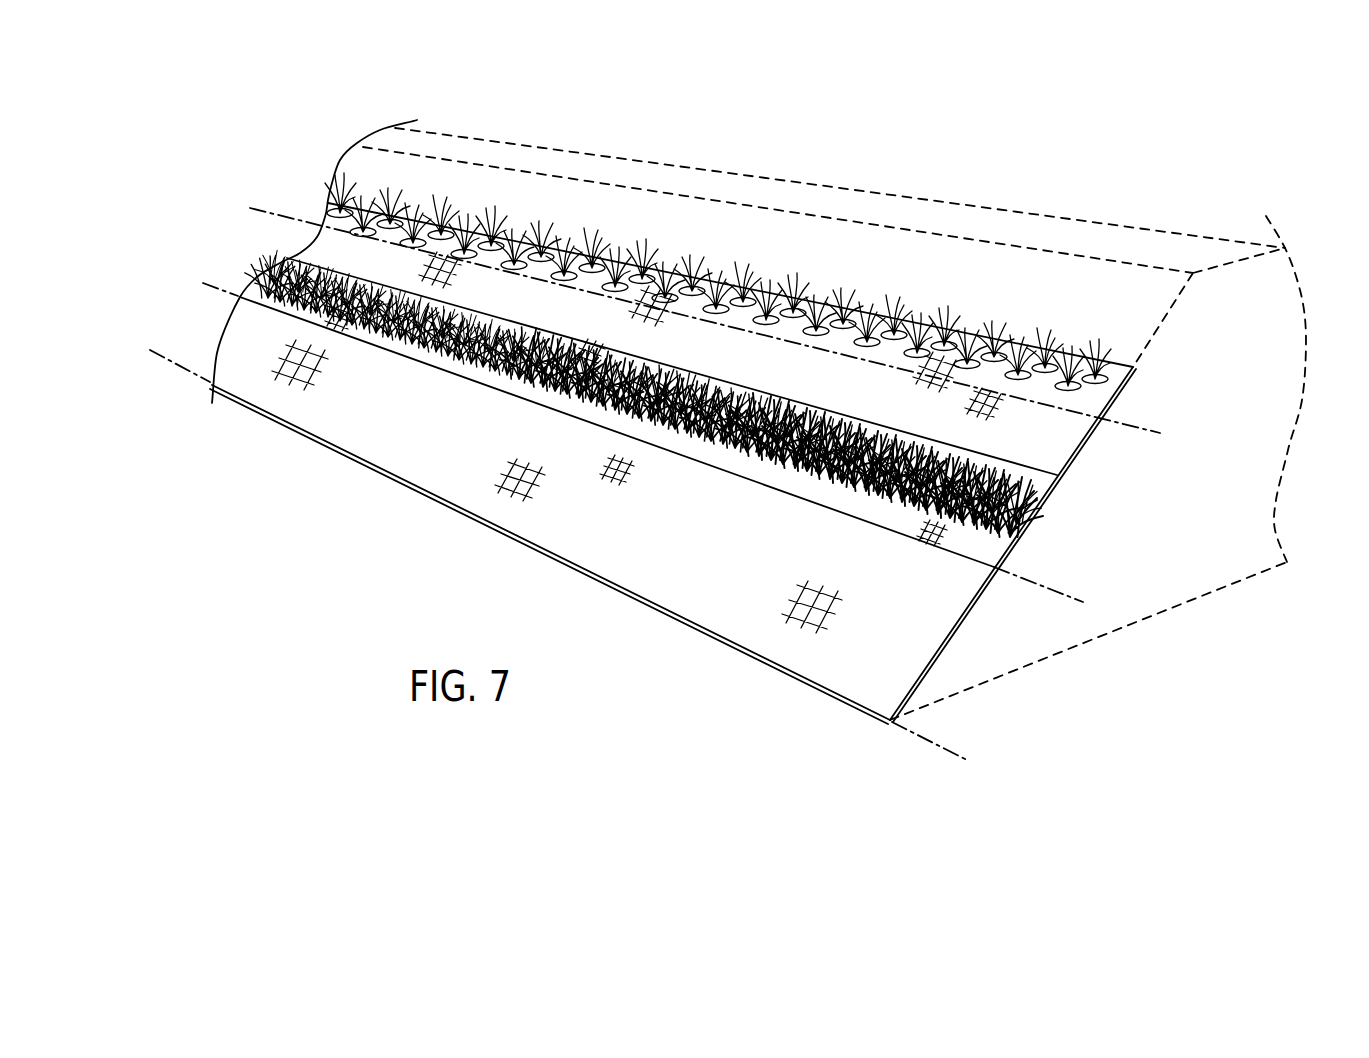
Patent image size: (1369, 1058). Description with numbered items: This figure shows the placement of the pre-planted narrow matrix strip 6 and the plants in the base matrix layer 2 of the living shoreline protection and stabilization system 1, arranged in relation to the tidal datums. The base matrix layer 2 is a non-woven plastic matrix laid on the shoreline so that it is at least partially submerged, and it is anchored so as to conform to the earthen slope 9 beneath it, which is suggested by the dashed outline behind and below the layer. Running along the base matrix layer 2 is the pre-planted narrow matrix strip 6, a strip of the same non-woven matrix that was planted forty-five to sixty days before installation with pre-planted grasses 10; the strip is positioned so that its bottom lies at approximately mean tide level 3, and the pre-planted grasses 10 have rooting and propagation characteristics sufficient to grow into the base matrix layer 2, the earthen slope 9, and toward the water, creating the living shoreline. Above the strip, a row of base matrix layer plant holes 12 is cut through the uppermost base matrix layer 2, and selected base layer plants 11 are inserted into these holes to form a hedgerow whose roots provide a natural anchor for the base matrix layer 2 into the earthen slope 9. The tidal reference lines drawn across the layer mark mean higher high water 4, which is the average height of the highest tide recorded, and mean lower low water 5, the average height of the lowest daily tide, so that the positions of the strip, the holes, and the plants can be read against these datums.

The living shoreline protection and stabilization system 1 is at (1030, 490).
The base matrix layer 2 is at (635, 365).
The mean tide level 3 is at (1048, 590).
The mean higher high water 4 is at (1130, 427).
The mean lower low water 5 is at (930, 749).
The pre-planted narrow matrix strip 6 is at (553, 380).
The earthen slope 9 is at (892, 247).
The pre-planted grasses 10 is at (932, 480).
The selected base layer plants 11 is at (538, 258).
The base matrix layer plant holes 12 is at (1050, 365).